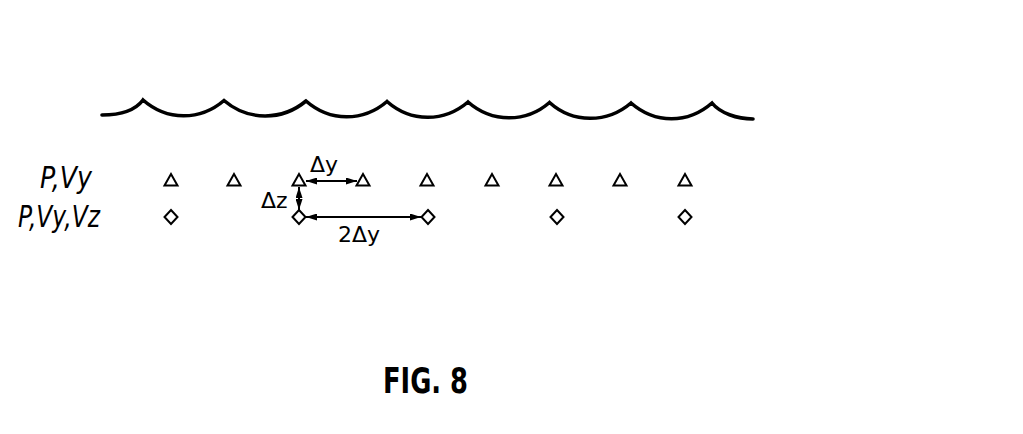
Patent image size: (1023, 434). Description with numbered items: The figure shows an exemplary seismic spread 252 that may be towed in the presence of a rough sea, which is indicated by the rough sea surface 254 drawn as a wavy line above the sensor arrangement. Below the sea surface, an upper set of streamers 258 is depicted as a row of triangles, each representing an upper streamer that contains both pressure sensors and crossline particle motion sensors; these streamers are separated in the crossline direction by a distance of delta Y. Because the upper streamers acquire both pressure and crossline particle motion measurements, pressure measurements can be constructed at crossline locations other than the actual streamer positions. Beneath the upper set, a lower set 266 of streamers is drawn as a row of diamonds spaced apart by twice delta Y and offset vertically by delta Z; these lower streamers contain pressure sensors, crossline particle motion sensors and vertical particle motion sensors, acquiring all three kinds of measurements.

The spread 252 is at (479, 69).
The rough sea surface 254 is at (340, 115).
The upper set of streamers 258 is at (540, 109).
The lower set of streamers 266 is at (540, 276).